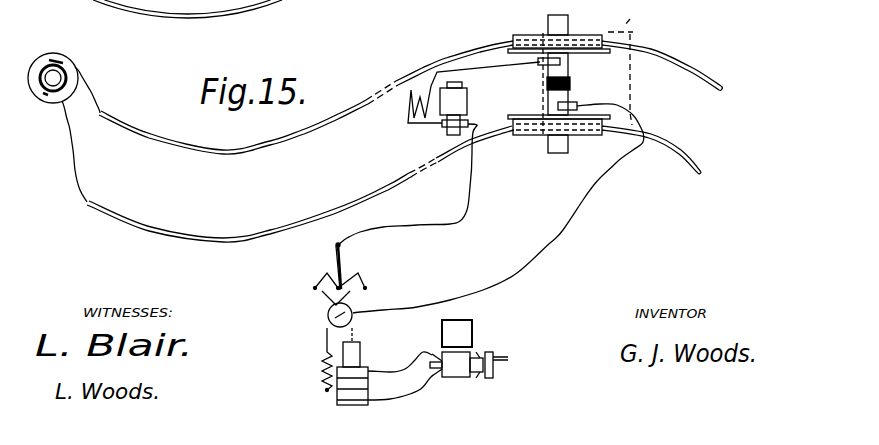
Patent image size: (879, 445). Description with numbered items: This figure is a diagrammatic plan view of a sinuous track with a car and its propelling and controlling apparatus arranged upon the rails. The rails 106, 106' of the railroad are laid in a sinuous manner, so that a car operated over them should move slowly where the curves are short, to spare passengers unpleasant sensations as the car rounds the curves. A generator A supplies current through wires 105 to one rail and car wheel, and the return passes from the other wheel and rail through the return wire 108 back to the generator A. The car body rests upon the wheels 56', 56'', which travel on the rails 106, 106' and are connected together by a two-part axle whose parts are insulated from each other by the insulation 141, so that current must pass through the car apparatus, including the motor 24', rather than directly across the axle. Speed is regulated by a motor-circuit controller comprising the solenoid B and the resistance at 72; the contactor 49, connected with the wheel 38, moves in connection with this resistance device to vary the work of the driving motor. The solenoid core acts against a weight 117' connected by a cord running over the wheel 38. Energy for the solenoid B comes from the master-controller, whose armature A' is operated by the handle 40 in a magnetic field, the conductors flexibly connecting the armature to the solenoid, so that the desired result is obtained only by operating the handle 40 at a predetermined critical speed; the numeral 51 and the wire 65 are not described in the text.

The generator A is at (48, 74).
The wires 105 is at (87, 84).
The return wire 108 is at (68, 131).
The rails 106 is at (682, 80).
The rail 106' is at (674, 166).
The wheel 56' is at (551, 74).
The wheel 56'' is at (559, 136).
The insulation 141 is at (572, 85).
The motor 24' is at (474, 98).
The contact arm wire 51 is at (406, 207).
The conductor wire 65 is at (478, 291).
The resistance 72 is at (366, 290).
The contactor 49 is at (324, 296).
The wheel 38 is at (330, 318).
The weight 117' is at (303, 360).
The solenoid B is at (368, 388).
The armature A' is at (461, 376).
The handle 40 is at (508, 351).